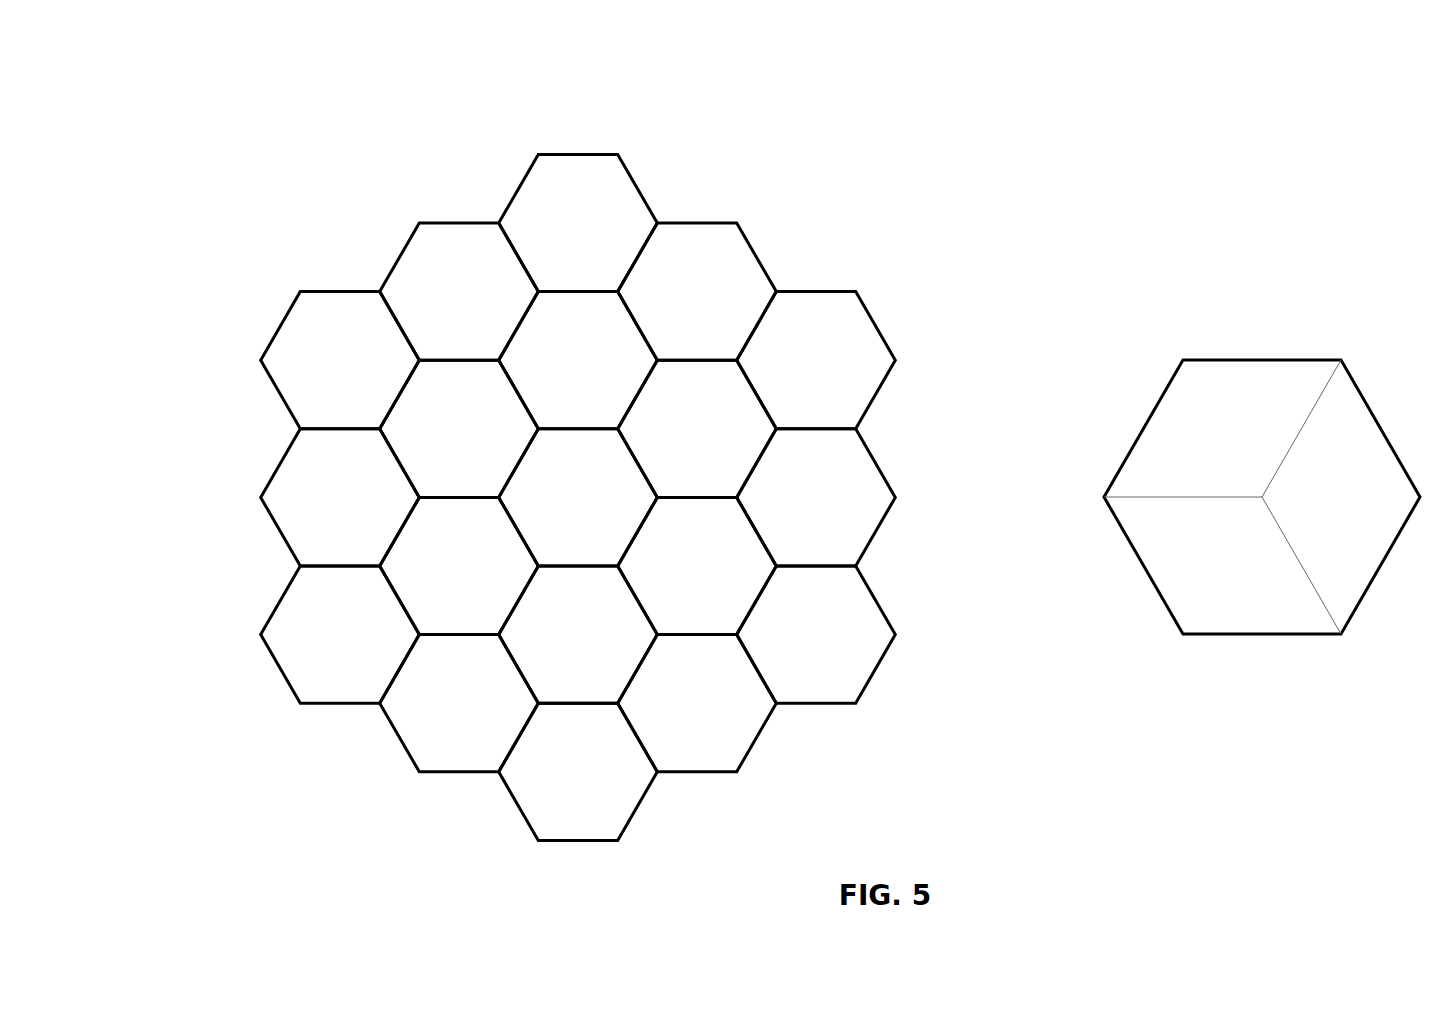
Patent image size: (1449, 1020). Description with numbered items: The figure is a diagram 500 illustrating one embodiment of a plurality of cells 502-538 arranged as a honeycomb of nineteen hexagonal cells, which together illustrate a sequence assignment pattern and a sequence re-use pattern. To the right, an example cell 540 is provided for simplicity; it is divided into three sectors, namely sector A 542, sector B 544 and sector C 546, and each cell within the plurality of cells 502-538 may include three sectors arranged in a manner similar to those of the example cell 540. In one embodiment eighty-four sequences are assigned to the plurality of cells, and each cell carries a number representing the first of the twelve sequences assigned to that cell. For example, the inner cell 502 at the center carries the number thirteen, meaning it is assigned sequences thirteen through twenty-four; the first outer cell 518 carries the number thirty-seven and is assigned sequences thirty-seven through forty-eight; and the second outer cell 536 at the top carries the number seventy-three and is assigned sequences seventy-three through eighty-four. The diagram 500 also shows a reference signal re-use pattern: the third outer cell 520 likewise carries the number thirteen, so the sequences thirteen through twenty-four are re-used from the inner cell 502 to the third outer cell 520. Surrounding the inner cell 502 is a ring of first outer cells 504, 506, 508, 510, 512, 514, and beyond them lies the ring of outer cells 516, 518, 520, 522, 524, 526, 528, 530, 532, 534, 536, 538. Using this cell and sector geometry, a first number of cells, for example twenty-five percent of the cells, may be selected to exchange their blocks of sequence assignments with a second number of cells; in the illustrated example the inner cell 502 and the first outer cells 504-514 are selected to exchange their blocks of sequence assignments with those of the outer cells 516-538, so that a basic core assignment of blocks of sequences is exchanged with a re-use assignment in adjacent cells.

The diagram 500 is at (205, 88).
The inner cell 502 is at (615, 480).
The first outer cell 504 is at (747, 565).
The first outer cell 506 is at (602, 663).
The first outer cell 508 is at (447, 600).
The first outer cell 510 is at (405, 425).
The first outer cell 512 is at (553, 313).
The first outer cell 514 is at (727, 397).
The outer cell 516 is at (855, 333).
The first outer cell 518 is at (865, 480).
The third outer cell 520 is at (870, 617).
The outer cell 522 is at (742, 737).
The outer cell 524 is at (578, 830).
The outer cell 526 is at (453, 757).
The outer cell 528 is at (287, 633).
The outer cell 530 is at (297, 497).
The outer cell 532 is at (293, 360).
The outer cell 534 is at (433, 248).
The second outer cell 536 is at (575, 172).
The outer cell 538 is at (703, 238).
The example cell 540 is at (1263, 360).
The sector A 542 is at (1335, 560).
The sector B 544 is at (1251, 428).
The sector C 546 is at (1197, 537).